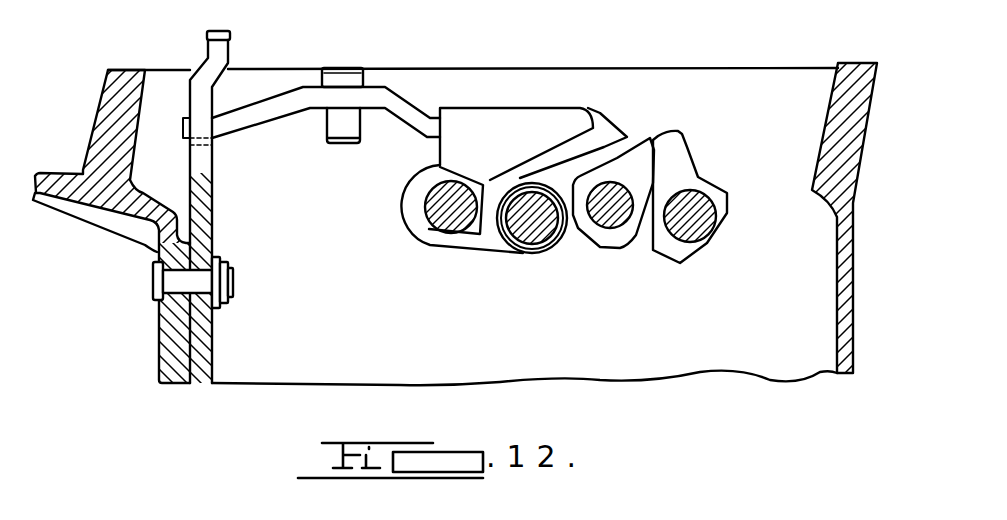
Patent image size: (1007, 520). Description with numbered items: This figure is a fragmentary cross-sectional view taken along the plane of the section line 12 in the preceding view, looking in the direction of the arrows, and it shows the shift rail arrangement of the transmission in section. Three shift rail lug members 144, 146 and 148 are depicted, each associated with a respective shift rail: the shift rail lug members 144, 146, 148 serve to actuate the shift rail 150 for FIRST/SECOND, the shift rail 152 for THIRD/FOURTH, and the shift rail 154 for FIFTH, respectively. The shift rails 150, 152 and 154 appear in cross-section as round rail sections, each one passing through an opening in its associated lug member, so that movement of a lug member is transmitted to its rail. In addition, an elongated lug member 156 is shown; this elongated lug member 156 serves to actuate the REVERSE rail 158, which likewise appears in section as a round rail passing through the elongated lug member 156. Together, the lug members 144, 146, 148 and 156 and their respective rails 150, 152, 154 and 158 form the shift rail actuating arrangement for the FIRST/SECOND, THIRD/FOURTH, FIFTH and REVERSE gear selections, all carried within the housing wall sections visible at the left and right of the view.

The housing 12 is at (846, 67).
The shift rail lug member 144 is at (673, 140).
The shift rail lug member 146 is at (642, 143).
The shift rail lug member 148 is at (606, 128).
The shift rail 150 is at (704, 232).
The shift rail 152 is at (613, 222).
The shift rail 154 is at (533, 233).
The elongated lug member 156 is at (487, 108).
The REVERSE rail 158 is at (450, 222).